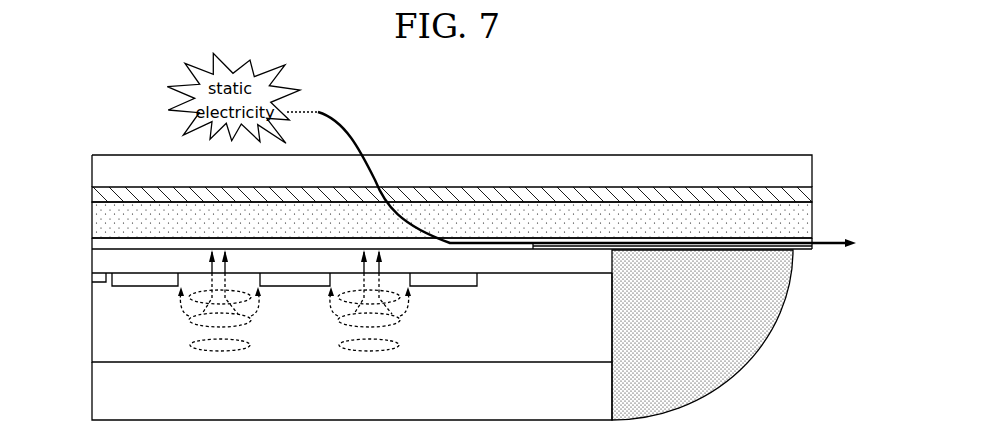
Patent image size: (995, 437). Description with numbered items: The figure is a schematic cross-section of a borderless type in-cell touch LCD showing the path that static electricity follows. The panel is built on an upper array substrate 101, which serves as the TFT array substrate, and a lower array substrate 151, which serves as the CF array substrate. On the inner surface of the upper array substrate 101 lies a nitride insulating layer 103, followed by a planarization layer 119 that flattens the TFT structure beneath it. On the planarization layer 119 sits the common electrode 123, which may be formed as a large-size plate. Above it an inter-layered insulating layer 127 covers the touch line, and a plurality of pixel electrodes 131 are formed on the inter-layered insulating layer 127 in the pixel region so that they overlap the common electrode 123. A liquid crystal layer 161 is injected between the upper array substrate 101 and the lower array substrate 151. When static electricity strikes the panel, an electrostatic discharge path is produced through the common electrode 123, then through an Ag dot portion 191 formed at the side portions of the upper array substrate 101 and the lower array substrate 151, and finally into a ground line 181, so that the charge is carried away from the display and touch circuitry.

The upper array substrate 101 is at (92, 168).
The nitride insulating layer 103 is at (92, 194).
The planarization layer 119 is at (92, 218).
The common electrode 123 is at (92, 243).
The inter-layered insulating layer 127 is at (92, 262).
The pixel electrodes 131 is at (92, 280).
The liquid crystal layer 161 is at (92, 318).
The lower array substrate 151 is at (92, 388).
The ground line 181 is at (797, 251).
The Ag dot portion 191 is at (750, 342).